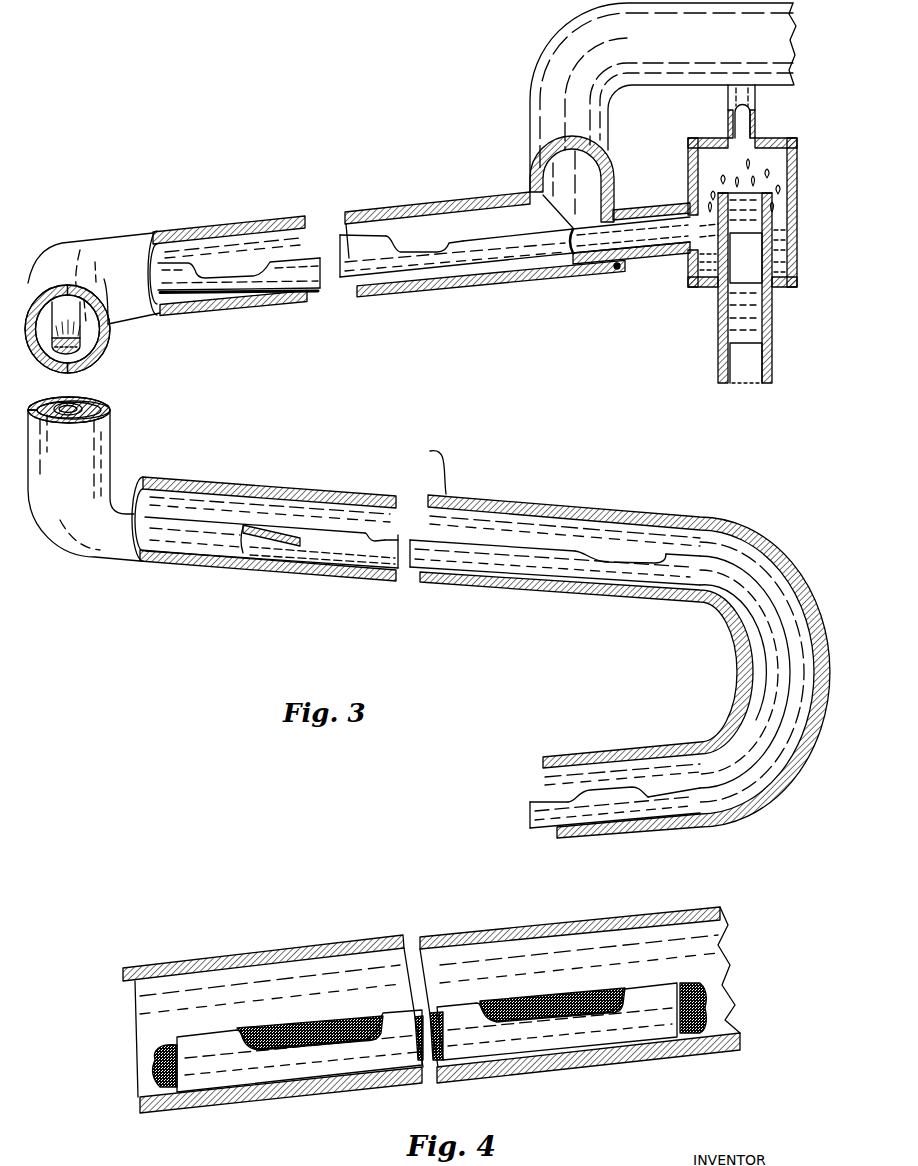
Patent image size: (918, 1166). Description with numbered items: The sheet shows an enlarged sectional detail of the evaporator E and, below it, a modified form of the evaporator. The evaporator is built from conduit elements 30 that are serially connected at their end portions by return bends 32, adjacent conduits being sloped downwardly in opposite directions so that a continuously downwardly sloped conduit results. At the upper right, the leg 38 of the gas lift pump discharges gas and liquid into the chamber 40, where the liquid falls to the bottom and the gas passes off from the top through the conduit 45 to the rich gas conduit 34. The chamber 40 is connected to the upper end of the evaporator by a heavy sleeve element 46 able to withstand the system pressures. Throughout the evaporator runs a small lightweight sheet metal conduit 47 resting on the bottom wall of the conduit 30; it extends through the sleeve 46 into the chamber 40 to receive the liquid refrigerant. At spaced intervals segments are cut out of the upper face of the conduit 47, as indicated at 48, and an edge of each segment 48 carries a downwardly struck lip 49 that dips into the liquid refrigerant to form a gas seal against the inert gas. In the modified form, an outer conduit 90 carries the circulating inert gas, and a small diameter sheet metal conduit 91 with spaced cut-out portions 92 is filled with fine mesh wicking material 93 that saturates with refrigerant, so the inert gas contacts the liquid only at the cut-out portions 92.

In FIG. 3, the conduit element 30 is at (215, 226).
In FIG. 3, the return bend 32 is at (112, 420).
In FIG. 3, the rich gas conduit 34 is at (663, 115).
In FIG. 3, the leg of the gas lift pump 38 is at (773, 316).
In FIG. 3, the chamber 40 is at (800, 173).
In FIG. 3, the conduit 45 is at (754, 102).
In FIG. 3, the sleeve element 46 is at (649, 209).
In FIG. 3, the inner conduit 47 is at (519, 258).
In FIG. 3, the cut-out segment 48 is at (437, 256).
In FIG. 3, the lip 49 is at (82, 328).
In FIG. 4, the outer conduit 90 is at (532, 921).
In FIG. 4, the conduit 91 is at (427, 1037).
In FIG. 4, the cut-out portion 92 is at (623, 990).
In FIG. 4, the wicking material 93 is at (557, 999).